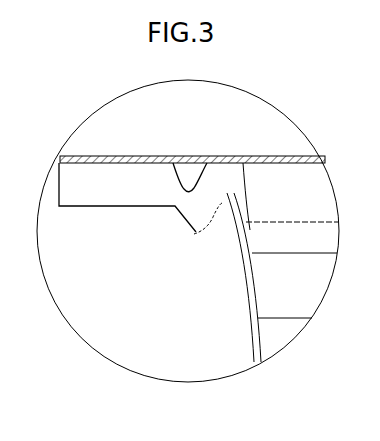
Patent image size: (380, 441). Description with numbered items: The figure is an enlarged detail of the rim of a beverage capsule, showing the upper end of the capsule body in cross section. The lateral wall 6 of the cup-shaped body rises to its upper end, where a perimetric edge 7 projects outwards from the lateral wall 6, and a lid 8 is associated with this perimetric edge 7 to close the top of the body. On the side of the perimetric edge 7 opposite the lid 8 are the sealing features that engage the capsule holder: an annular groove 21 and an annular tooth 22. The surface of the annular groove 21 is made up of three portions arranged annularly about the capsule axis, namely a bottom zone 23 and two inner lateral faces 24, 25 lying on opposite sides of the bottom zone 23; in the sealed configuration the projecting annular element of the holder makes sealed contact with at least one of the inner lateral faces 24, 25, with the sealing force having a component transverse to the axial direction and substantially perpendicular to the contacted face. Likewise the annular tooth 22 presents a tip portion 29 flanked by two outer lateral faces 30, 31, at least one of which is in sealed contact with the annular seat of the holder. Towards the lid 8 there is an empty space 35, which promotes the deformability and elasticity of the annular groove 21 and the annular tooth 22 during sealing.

The lateral wall 6 is at (240, 232).
The perimetric edge 7 is at (80, 204).
The lid 8 is at (228, 158).
The annular groove 21 is at (221, 242).
The annular tooth 22 is at (183, 228).
The bottom zone 23 is at (222, 202).
The inner lateral face 24 is at (226, 213).
The inner lateral face 25 is at (217, 211).
The tip portion 29 is at (192, 242).
The outer lateral face 30 is at (184, 231).
The outer lateral face 31 is at (218, 221).
The empty space 35 is at (195, 175).